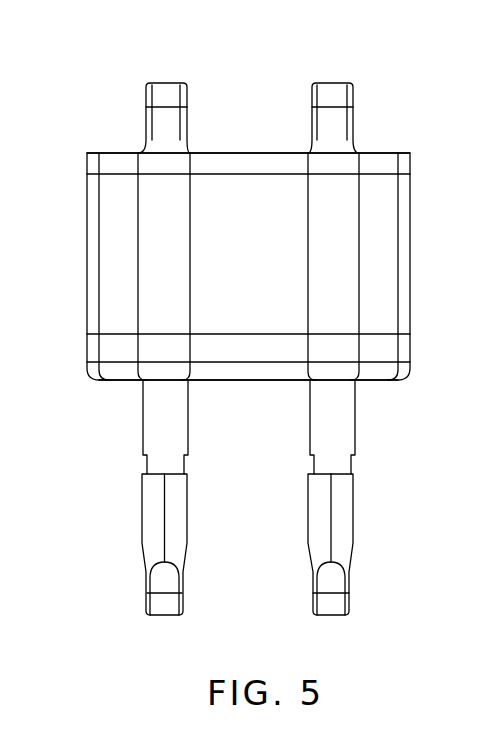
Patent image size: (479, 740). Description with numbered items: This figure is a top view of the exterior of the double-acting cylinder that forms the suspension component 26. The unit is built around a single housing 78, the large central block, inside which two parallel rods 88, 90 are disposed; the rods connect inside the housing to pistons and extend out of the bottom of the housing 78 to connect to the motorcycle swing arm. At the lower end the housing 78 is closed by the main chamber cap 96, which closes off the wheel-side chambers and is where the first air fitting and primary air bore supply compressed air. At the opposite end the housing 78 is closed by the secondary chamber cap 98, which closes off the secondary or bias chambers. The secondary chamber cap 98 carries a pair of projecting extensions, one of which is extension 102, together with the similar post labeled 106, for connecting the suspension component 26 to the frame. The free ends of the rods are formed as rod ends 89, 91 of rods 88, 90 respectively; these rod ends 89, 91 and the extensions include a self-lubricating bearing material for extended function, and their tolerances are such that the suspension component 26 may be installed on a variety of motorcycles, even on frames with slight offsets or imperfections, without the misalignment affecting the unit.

The suspension component 26 is at (414, 150).
The housing 78 is at (405, 258).
The secondary chamber cap 98 is at (245, 165).
The main chamber cap 96 is at (403, 369).
The extension 102 is at (186, 83).
The second post 106 is at (320, 86).
The rod 90 is at (193, 452).
The rod end 91 is at (185, 550).
The rod 88 is at (357, 437).
The rod end 89 is at (354, 536).